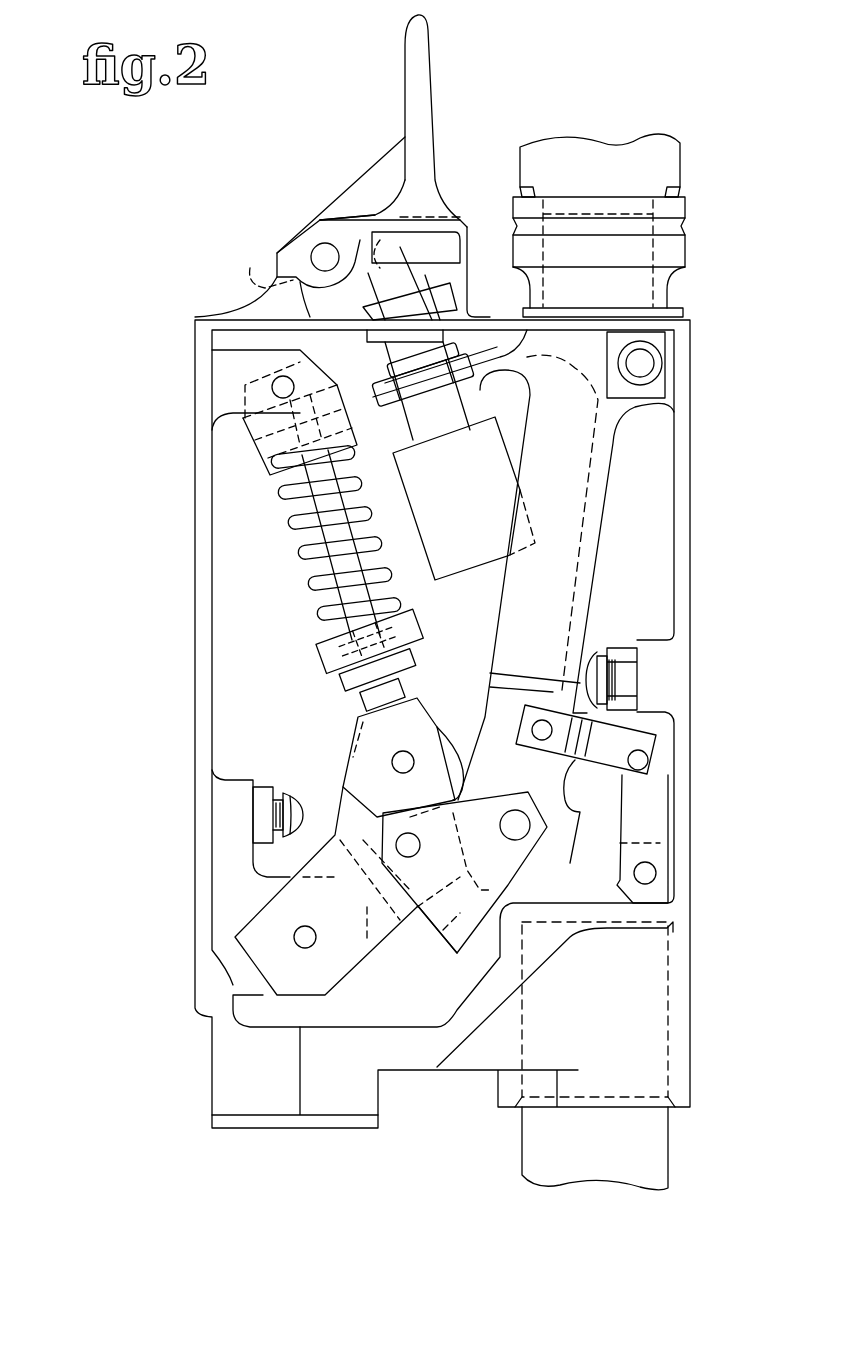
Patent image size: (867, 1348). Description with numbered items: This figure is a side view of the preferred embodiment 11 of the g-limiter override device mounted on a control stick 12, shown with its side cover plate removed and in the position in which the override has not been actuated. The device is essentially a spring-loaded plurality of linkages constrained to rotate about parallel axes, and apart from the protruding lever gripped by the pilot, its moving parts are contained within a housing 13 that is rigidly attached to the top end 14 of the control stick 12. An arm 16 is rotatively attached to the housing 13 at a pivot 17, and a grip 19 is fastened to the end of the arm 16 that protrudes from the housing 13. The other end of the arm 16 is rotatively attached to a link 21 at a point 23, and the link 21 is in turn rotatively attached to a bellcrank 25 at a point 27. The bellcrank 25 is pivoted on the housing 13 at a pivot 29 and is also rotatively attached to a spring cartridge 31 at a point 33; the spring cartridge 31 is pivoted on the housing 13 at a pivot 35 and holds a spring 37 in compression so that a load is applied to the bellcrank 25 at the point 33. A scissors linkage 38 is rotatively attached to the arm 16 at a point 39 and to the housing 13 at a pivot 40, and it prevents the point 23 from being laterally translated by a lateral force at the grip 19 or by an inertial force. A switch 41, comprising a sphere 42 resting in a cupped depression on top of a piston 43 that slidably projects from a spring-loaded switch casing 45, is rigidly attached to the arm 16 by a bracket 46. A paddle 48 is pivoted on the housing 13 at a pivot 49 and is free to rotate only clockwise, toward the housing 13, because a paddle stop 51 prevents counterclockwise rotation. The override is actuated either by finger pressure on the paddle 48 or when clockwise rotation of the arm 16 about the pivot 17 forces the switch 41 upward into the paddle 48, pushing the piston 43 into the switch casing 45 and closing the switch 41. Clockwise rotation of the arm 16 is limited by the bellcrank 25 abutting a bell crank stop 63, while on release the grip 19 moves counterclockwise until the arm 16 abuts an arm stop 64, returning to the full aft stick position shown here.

The preferred embodiment 11 is at (180, 465).
The control stick 12 is at (665, 1142).
The housing 13 is at (690, 414).
The top end 14 is at (655, 920).
The arm 16 is at (680, 265).
The pivot 17 is at (652, 362).
The grip 19 is at (672, 163).
The link 21 is at (460, 950).
The point 23 is at (520, 820).
The bellcrank 25 is at (410, 915).
The point 27 is at (403, 842).
The pivot 29 is at (310, 940).
The spring cartridge 31 is at (262, 468).
The point 33 is at (398, 758).
The pivot 35 is at (288, 385).
The spring 37 is at (312, 590).
The scissors linkage 38 is at (660, 790).
The point 39 is at (538, 727).
The pivot 40 is at (652, 873).
The switch 41 is at (472, 565).
The sphere 42 is at (450, 228).
The piston 43 is at (370, 298).
The switch casing 45 is at (485, 430).
The bracket 46 is at (396, 405).
The paddle 48 is at (412, 42).
The pivot 49 is at (325, 248).
The paddle stop 51 is at (262, 285).
The bell crank stop 63 is at (298, 790).
The arm stop 64 is at (597, 658).